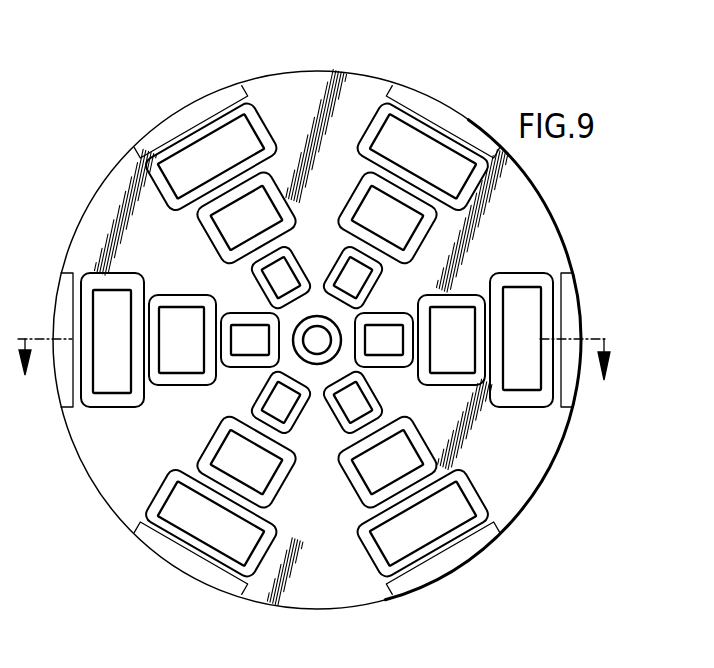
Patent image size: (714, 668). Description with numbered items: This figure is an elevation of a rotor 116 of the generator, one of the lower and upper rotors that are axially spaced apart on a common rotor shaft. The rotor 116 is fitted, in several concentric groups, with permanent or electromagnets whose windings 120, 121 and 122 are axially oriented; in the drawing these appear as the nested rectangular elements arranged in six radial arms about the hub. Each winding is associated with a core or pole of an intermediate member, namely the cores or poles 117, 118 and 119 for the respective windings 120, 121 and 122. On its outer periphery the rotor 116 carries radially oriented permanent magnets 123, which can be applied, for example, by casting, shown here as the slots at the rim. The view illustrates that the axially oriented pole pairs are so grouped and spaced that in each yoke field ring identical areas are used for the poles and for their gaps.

The rotor 116 is at (522, 483).
The intermediate member core or pole 117 is at (280, 270).
The intermediate member core or pole 118 is at (235, 455).
The intermediate member core or pole 119 is at (107, 375).
The winding 120 is at (306, 403).
The winding 121 is at (346, 466).
The winding 122 is at (373, 563).
The radially oriented permanent magnet 123 is at (570, 300).